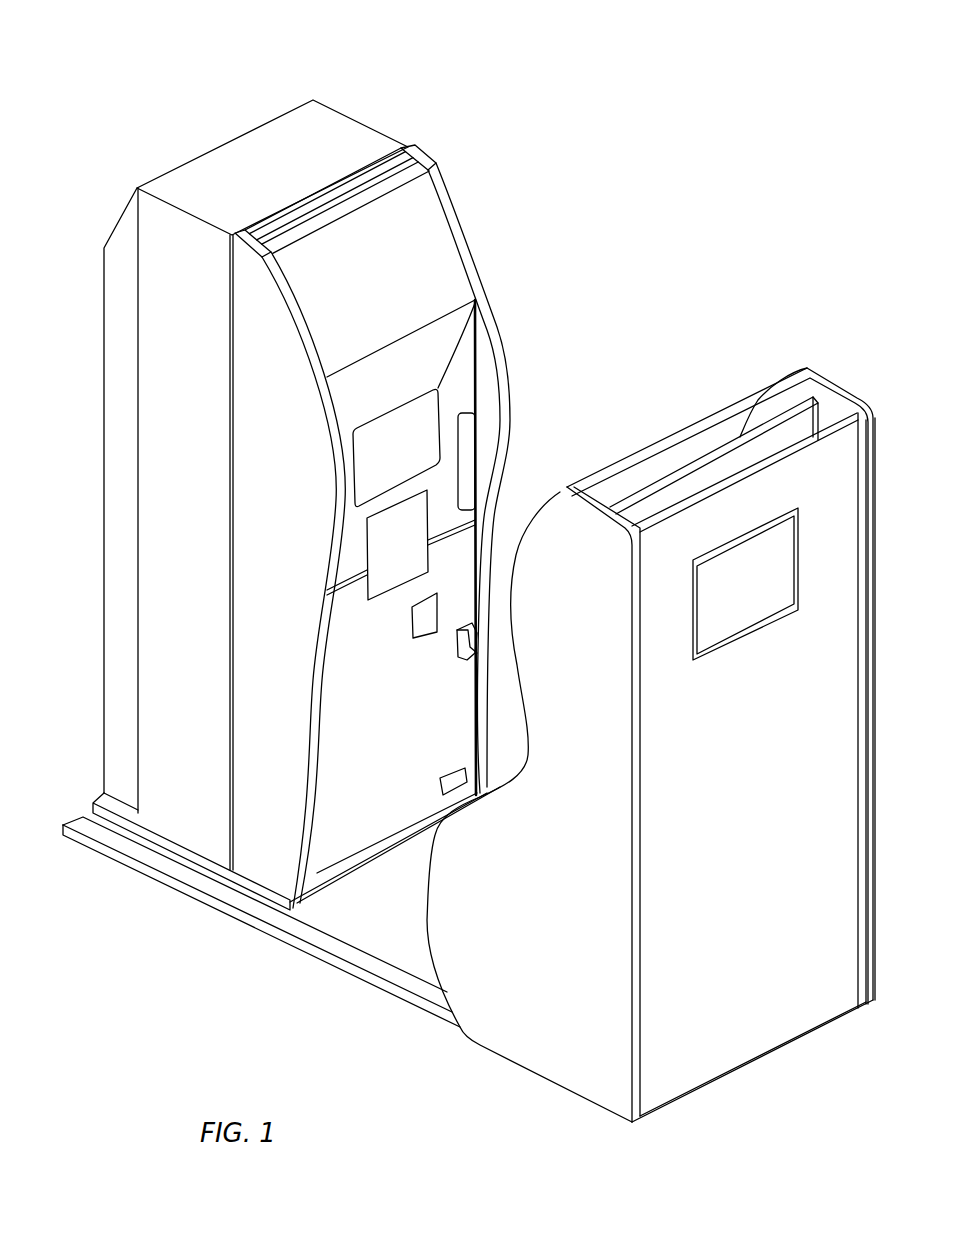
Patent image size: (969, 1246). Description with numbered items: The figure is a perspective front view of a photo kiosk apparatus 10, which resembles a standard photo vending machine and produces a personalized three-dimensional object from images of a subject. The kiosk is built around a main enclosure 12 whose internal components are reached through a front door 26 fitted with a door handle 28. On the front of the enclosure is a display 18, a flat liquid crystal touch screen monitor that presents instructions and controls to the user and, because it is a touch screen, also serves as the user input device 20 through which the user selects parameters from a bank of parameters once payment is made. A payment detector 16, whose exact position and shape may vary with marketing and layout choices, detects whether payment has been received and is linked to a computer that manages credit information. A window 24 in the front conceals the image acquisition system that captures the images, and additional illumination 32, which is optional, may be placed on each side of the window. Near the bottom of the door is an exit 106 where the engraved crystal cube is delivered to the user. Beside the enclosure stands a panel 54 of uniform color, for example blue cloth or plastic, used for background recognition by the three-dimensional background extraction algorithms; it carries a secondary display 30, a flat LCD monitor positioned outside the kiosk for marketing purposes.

The apparatus 10 is at (538, 143).
The main enclosure 12 is at (245, 120).
The payment detector 16 is at (412, 627).
The display 18 is at (453, 496).
The user input device 20 is at (475, 303).
The window 24 is at (432, 505).
The front door 26 is at (335, 820).
The door handle 28 is at (458, 660).
The secondary display 30 is at (748, 613).
The additional illumination 32 is at (468, 425).
The panel 54 is at (690, 457).
The exit 106 is at (440, 787).